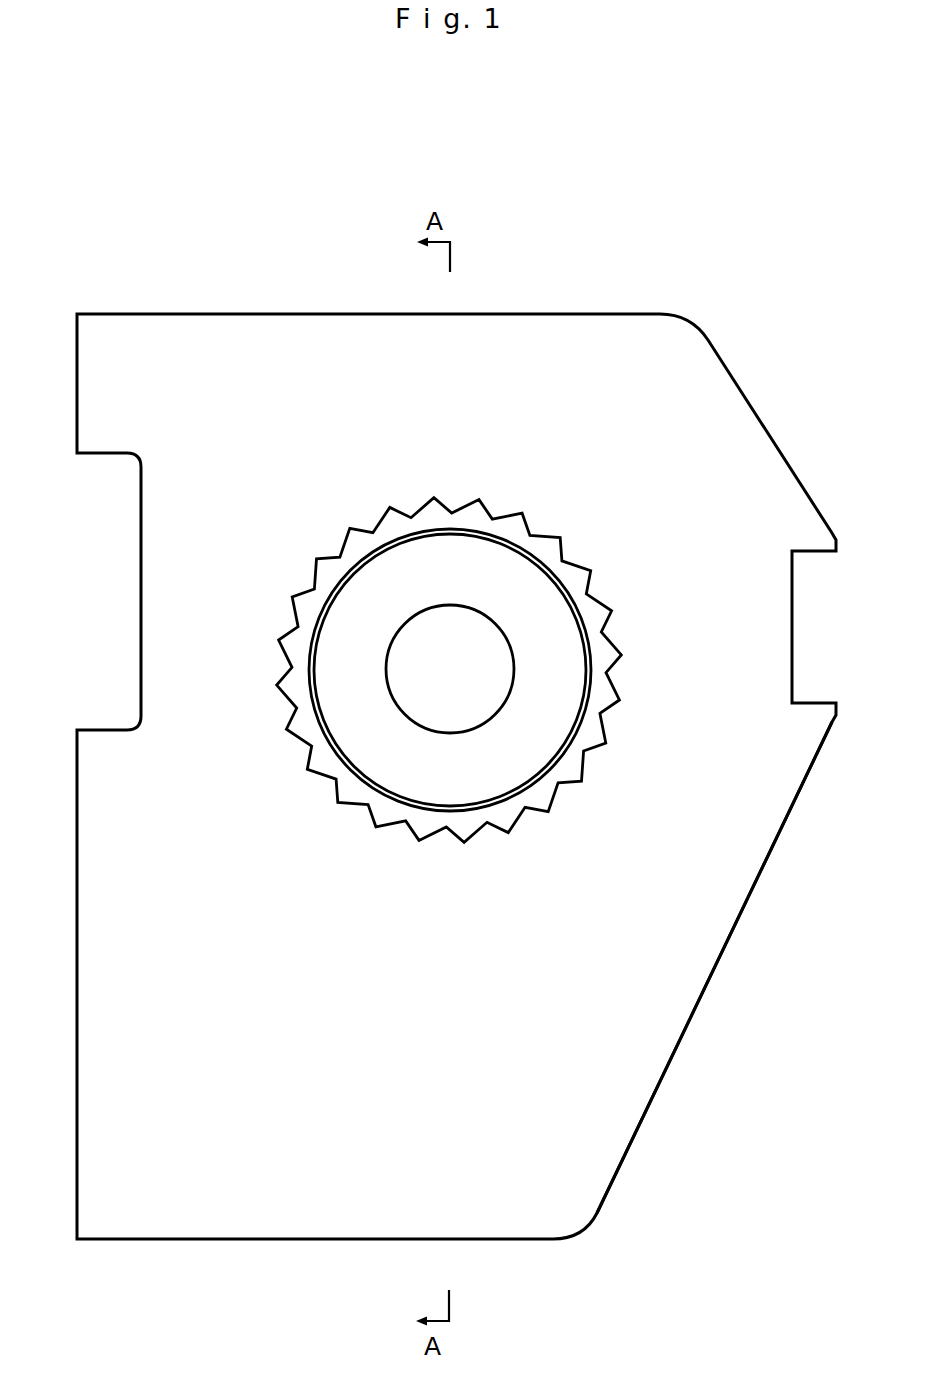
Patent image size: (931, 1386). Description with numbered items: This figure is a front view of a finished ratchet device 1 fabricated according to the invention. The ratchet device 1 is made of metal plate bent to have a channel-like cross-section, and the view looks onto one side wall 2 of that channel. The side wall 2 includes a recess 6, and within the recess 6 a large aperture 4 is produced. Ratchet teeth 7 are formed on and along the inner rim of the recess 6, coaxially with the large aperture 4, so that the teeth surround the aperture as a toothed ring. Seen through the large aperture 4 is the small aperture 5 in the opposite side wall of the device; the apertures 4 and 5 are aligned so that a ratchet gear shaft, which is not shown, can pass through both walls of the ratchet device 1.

The ratchet device 1 is at (730, 308).
The side wall 2 is at (742, 895).
The large aperture 4 is at (557, 745).
The small aperture 5 is at (455, 606).
The recess 6 is at (582, 612).
The ratchet teeth 7 is at (333, 775).